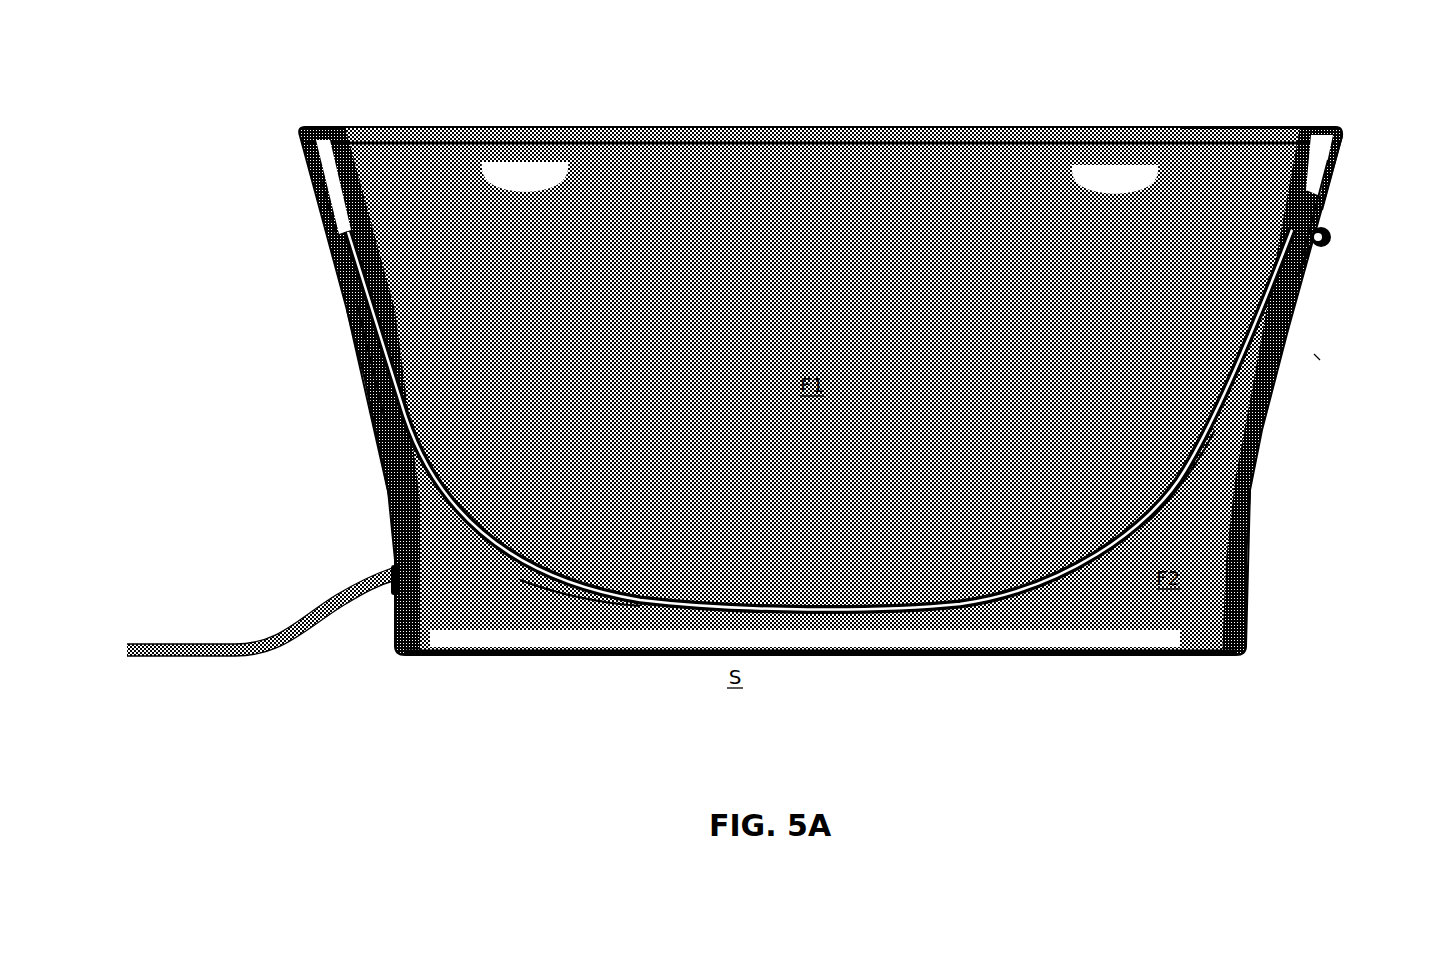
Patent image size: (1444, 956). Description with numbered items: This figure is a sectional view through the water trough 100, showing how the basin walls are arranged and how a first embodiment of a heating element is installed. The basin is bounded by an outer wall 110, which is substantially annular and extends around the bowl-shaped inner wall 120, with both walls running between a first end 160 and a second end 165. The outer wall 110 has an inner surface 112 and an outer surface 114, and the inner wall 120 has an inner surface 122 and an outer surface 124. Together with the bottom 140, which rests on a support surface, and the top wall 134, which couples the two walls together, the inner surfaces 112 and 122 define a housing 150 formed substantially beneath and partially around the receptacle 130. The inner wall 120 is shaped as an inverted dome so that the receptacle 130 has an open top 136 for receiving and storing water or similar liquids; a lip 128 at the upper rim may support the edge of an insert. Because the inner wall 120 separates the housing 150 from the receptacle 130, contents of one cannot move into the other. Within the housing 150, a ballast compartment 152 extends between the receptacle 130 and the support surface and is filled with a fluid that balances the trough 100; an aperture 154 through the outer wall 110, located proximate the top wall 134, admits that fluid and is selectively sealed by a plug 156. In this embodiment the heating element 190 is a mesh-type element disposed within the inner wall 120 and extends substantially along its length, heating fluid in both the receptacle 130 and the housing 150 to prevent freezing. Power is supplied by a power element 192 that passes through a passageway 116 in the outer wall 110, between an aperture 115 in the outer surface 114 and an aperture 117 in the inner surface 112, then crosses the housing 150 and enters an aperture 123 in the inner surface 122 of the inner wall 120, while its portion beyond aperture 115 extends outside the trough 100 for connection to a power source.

The water trough 100 is at (228, 165).
The outer wall 110 is at (1262, 430).
The inner surface of outer wall 112 is at (1205, 550).
The outer surface of outer wall 114 is at (1248, 566).
The aperture 115 is at (387, 586).
The passageway 116 is at (363, 363).
The aperture 117 is at (333, 238).
The inner wall 120 is at (332, 172).
The inner surface of inner wall 122 is at (1313, 190).
The aperture 123 is at (345, 235).
The outer surface of inner wall 124 is at (1188, 127).
The lip 128 is at (1292, 138).
The receptacle 130 is at (527, 137).
The top wall 134 is at (1323, 127).
The open top 136 is at (857, 145).
The bottom 140 is at (607, 654).
The housing 150 is at (478, 592).
The ballast compartment 152 is at (540, 605).
The aperture 154 is at (1317, 252).
The plug 156 is at (1333, 237).
The first end 160 is at (320, 347).
The second end 165 is at (1318, 357).
The heating element 190 is at (400, 415).
The power element 192 is at (248, 640).